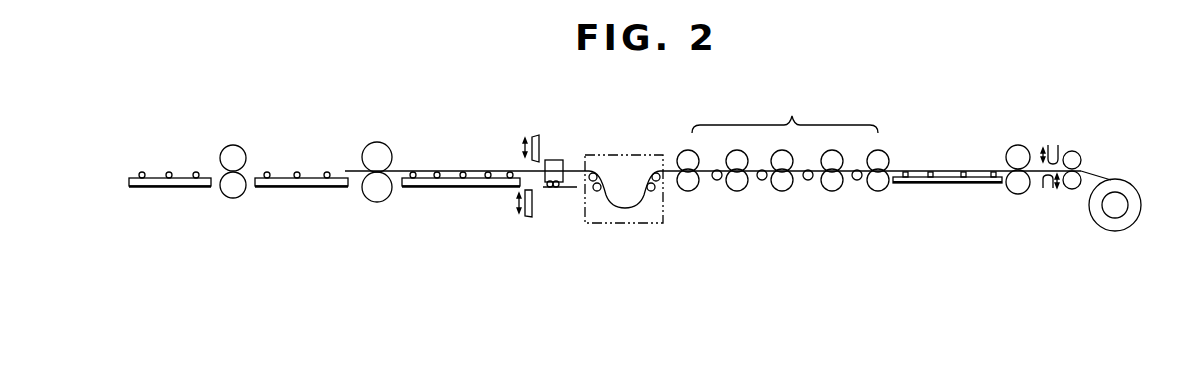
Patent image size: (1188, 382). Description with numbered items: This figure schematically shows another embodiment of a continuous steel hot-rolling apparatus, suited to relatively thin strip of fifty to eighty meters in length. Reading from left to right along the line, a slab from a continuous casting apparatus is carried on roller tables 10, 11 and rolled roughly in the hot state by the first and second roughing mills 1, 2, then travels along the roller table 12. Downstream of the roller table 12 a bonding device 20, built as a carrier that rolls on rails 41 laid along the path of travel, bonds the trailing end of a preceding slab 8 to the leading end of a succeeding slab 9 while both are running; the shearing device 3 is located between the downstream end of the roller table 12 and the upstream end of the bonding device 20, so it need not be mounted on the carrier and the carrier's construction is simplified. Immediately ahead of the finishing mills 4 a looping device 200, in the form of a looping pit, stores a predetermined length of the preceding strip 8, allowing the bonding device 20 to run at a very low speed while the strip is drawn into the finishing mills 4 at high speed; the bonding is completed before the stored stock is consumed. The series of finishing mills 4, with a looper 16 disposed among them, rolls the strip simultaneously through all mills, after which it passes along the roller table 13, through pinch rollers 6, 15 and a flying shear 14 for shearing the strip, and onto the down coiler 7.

The first roughing mill 1 is at (245, 152).
The second roughing mill 2 is at (387, 152).
The upper cutter / clamp 3 is at (535, 135).
The series of finishing mills 4 is at (781, 162).
The pinch rollers 6 is at (1016, 147).
The down coiler 7 is at (1118, 231).
The preceding slab 8 is at (673, 174).
The succeeding slab 9 is at (500, 170).
The roller table 10 is at (173, 189).
The roller table 11 is at (300, 189).
The roller table 12 is at (477, 188).
The roller table 13 is at (945, 185).
The flying shear 14 is at (1041, 190).
The pinch rollers 15 is at (1080, 158).
The looper 16 is at (763, 181).
The bonding device 20 is at (558, 160).
The rails 41 is at (555, 190).
The looping device 200 is at (612, 223).